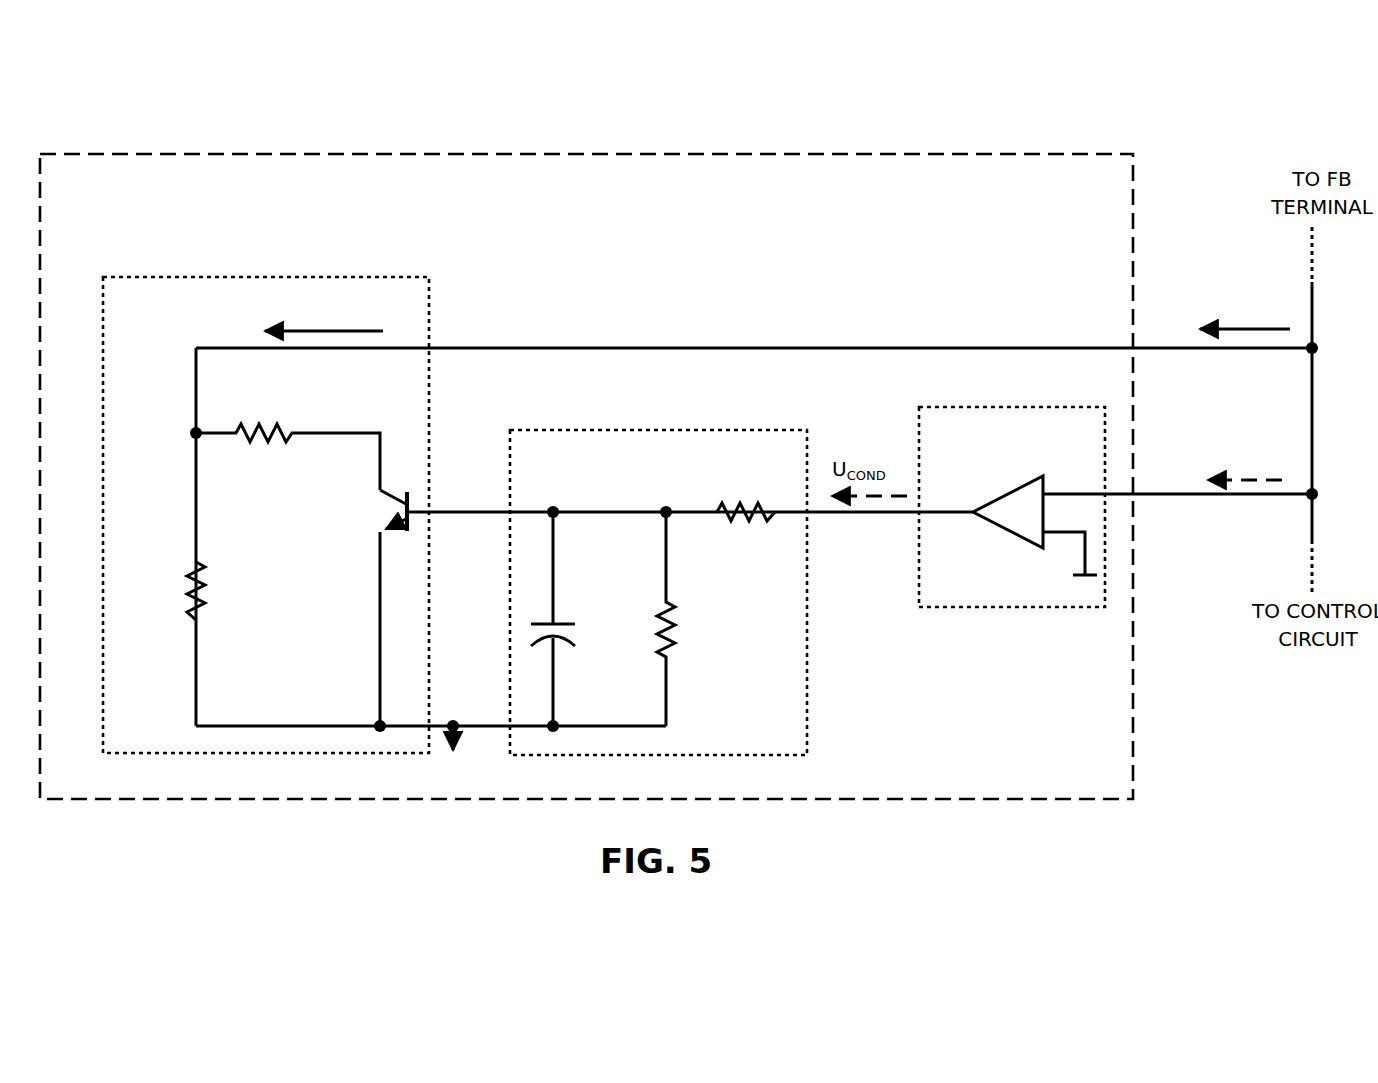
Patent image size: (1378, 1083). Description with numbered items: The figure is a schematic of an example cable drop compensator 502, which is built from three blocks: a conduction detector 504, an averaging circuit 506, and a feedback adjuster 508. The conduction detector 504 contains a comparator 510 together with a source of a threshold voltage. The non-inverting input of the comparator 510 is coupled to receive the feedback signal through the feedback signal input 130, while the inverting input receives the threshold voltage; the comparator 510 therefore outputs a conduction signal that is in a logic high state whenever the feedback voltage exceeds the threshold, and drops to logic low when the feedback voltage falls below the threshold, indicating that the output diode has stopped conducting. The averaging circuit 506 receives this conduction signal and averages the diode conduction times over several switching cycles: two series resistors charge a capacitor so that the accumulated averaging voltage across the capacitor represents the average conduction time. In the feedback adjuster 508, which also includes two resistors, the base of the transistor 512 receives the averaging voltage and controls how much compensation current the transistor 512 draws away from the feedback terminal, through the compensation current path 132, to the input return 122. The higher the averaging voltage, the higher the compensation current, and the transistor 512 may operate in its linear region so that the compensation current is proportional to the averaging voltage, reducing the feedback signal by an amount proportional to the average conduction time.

The cable drop compensator 502 is at (1131, 152).
The conduction detector 504 is at (1012, 482).
The averaging circuit 506 is at (677, 428).
The feedback adjuster 508 is at (278, 483).
The comparator 510 is at (1014, 478).
The transistor 512 is at (365, 503).
The input return 122 is at (458, 742).
The feedback signal input 130 is at (1138, 498).
The compensation current output 132 is at (1145, 345).